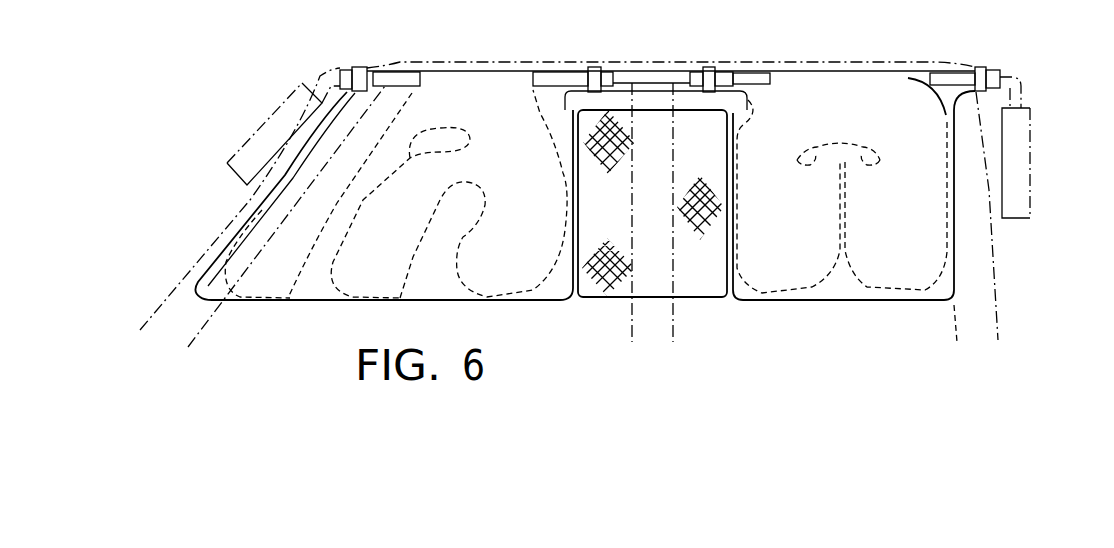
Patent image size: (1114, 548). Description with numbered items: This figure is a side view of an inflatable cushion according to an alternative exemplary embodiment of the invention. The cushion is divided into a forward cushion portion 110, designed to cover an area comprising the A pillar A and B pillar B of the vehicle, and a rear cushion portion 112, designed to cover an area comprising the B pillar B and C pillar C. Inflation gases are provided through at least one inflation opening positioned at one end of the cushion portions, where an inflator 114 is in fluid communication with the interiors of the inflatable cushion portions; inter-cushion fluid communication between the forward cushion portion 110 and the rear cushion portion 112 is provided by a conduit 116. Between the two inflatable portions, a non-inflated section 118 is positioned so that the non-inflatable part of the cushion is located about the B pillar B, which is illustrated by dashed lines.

The forward cushion portion 110 is at (298, 308).
The rear cushion portion 112 is at (863, 306).
The inflator 114 is at (258, 137).
The conduit 116 is at (657, 74).
The non-inflated section 118 is at (698, 298).
The A pillar A is at (191, 272).
The B pillar B is at (640, 302).
The C pillar C is at (987, 268).